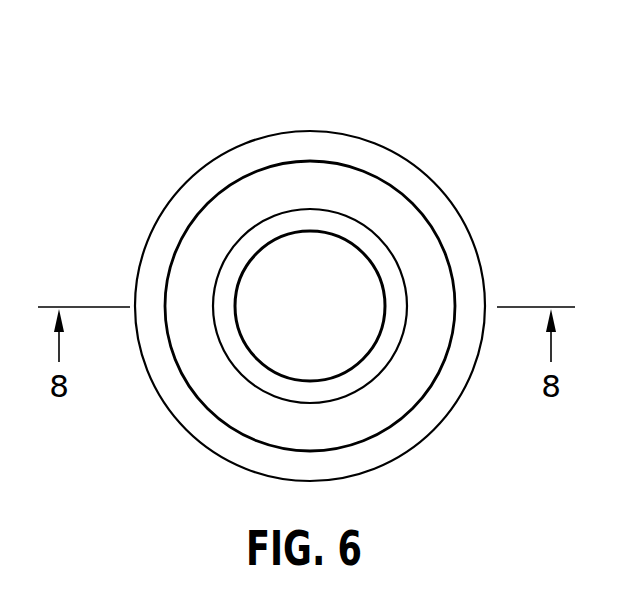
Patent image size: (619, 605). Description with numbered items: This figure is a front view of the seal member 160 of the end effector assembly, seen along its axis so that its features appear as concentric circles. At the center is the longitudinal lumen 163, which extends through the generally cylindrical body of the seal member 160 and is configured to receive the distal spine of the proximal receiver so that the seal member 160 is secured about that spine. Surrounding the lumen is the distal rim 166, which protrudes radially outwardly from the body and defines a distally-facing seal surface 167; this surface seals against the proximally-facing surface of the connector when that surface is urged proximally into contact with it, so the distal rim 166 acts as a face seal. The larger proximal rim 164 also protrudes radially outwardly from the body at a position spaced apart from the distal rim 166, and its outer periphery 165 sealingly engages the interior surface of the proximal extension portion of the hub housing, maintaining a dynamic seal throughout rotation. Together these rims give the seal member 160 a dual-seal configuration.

The seal member 160 is at (328, 111).
The longitudinal lumen 163 is at (291, 315).
The proximal rim 164 is at (410, 188).
The outer periphery 165 is at (455, 189).
The distal rim 166 is at (375, 379).
The distally-facing seal surface 167 is at (383, 348).